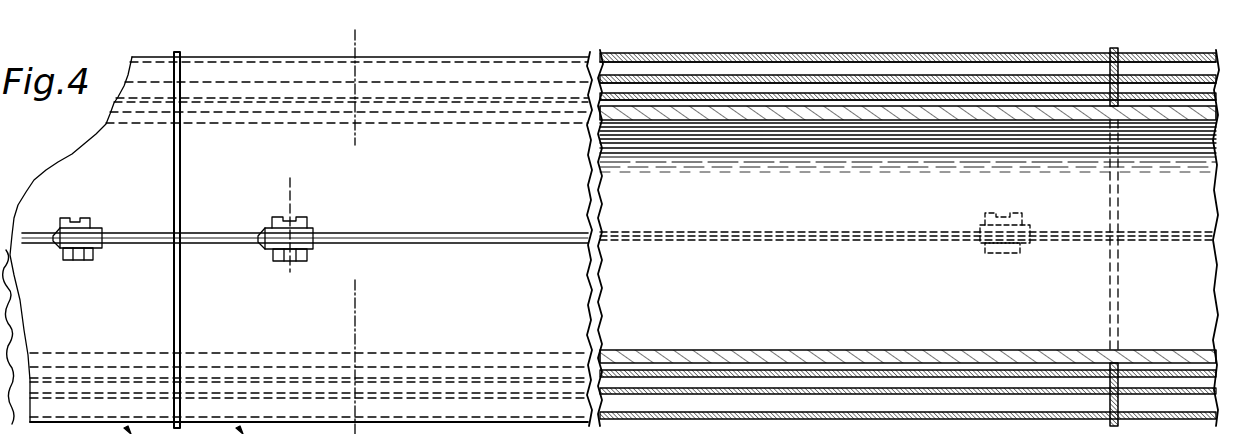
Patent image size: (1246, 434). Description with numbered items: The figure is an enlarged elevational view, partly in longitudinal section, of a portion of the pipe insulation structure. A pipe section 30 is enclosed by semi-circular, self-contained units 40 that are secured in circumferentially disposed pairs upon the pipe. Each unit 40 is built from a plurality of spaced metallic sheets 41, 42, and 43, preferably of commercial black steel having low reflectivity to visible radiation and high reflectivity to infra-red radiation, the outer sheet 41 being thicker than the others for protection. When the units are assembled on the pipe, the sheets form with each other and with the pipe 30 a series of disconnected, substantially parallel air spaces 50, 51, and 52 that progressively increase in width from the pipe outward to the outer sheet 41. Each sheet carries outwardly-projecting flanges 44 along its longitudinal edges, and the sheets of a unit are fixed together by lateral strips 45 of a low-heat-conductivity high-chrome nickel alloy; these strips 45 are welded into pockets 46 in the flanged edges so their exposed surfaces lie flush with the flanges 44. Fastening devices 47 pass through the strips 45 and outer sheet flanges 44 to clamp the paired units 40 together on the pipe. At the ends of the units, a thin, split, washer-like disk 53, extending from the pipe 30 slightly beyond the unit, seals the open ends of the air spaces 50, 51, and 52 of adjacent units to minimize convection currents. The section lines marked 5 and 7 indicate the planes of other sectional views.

The pipe section 30 is at (567, 351).
The self-contained unit 40 is at (572, 50).
The outer sheet 41 is at (922, 56).
The metallic sheet 42 is at (980, 76).
The metallic sheet 43 is at (1028, 93).
The flange 44 is at (58, 216).
The lateral strip 45 is at (100, 232).
The pocket 46 is at (64, 258).
The fastening device 47 is at (95, 218).
The air space 50 is at (633, 102).
The air space 51 is at (673, 86).
The air space 52 is at (727, 65).
The disk 53 is at (180, 52).
The section line 5- 5 is at (330, 432).
The section line 7- 7 is at (256, 168).